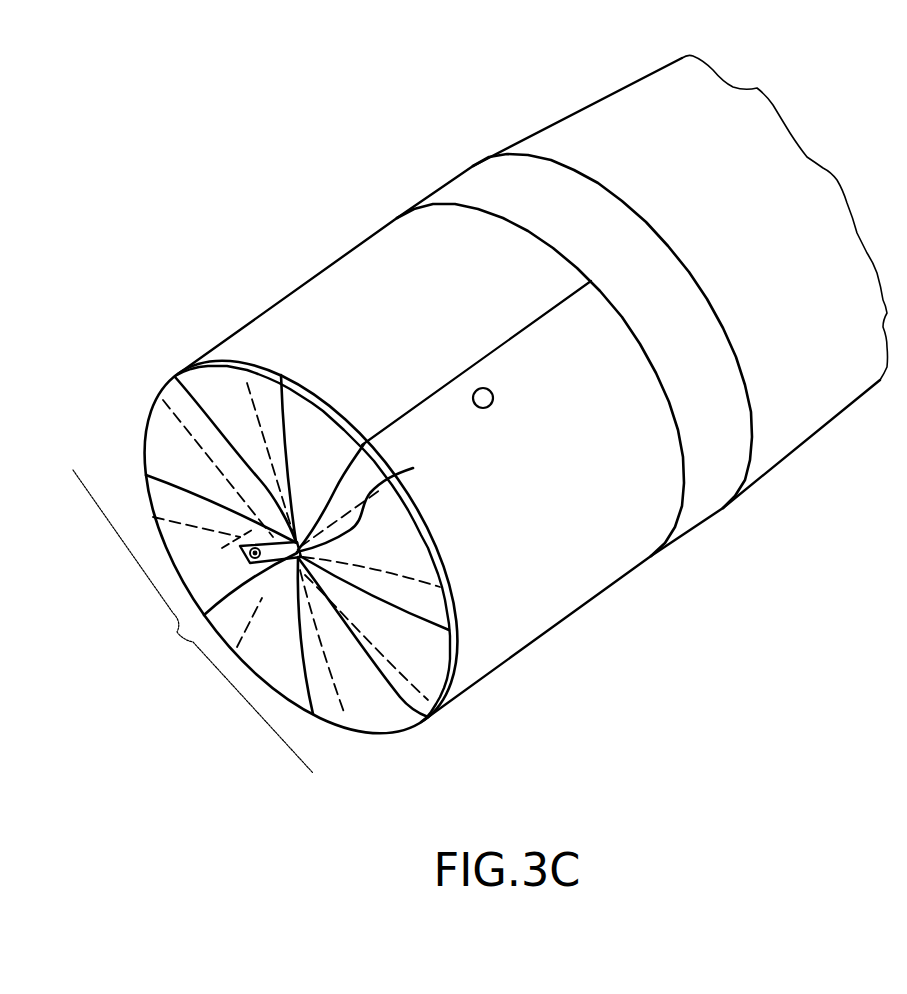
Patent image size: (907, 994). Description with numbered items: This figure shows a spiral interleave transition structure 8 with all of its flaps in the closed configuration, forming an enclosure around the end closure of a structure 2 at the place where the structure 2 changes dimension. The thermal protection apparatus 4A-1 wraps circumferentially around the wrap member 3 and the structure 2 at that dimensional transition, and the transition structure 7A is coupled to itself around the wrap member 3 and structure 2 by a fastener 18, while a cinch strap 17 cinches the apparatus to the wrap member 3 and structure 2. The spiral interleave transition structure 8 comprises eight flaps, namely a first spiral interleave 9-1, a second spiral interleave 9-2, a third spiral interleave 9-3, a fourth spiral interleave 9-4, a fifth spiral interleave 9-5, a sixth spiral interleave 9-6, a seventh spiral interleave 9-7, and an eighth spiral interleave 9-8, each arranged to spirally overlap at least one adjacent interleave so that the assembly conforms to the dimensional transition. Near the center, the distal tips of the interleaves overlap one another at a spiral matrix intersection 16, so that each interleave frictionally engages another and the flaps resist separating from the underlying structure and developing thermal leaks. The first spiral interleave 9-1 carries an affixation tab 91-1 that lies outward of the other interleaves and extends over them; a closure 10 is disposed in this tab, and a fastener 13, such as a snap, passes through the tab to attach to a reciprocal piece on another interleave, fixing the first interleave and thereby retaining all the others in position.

The structure 2 is at (585, 117).
The wrap member 3 is at (468, 178).
The thermal protection apparatus 4A-1 is at (363, 250).
The transition structure 7A is at (120, 352).
The spiral interleave transition structure 8 is at (193, 621).
The first spiral interleave 9-1 is at (400, 543).
The second spiral interleave 9-2 is at (310, 431).
The third spiral interleave 9-3 is at (233, 393).
The fourth spiral interleave 9-4 is at (163, 437).
The fifth spiral interleave 9-5 is at (187, 555).
The sixth spiral interleave 9-6 is at (268, 673).
The seventh spiral interleave 9-7 is at (371, 728).
The eighth spiral interleave 9-8 is at (427, 670).
The closure 10 is at (238, 530).
The fastener 13 is at (252, 560).
The spiral matrix intersection 16 is at (368, 501).
The cinch strap 17 is at (235, 365).
The fastener 18 is at (475, 390).
The affixation tab 91-1 is at (287, 535).